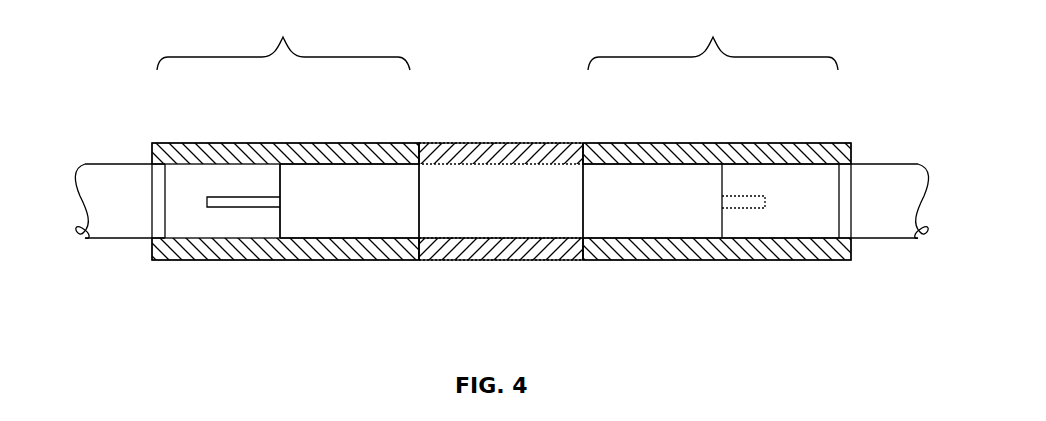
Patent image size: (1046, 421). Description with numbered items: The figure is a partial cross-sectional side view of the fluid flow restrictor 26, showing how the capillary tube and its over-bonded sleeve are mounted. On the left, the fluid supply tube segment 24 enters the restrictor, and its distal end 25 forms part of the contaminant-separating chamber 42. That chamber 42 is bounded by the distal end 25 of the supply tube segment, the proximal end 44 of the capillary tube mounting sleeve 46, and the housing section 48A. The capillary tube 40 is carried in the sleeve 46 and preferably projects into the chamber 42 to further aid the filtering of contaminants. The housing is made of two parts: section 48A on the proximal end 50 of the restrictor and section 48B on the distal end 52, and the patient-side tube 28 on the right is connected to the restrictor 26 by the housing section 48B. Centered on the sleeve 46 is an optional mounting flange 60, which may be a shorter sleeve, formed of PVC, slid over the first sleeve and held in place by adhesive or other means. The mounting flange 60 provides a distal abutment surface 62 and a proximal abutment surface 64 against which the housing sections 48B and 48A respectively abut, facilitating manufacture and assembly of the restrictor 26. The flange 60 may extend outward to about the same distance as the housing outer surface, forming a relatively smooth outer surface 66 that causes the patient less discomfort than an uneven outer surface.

The fluid supply tube segment 24 is at (131, 240).
The distal end 25 is at (168, 176).
The restrictor 26 is at (142, 72).
The patient-side tube 28 is at (872, 178).
The capillary tube 40 is at (213, 197).
The contaminant-separating chamber 42 is at (214, 234).
The proximal end 44 is at (284, 178).
The capillary tube mounting sleeve 46 is at (364, 178).
The housing section 48A is at (310, 252).
The housing section 48B is at (735, 253).
The proximal end 50 is at (283, 37).
The distal end 52 is at (713, 37).
The mounting flange 60 is at (495, 160).
The distal abutment surface 62 is at (588, 143).
The proximal abutment surface 64 is at (412, 243).
The smooth outer surface 66 is at (529, 261).